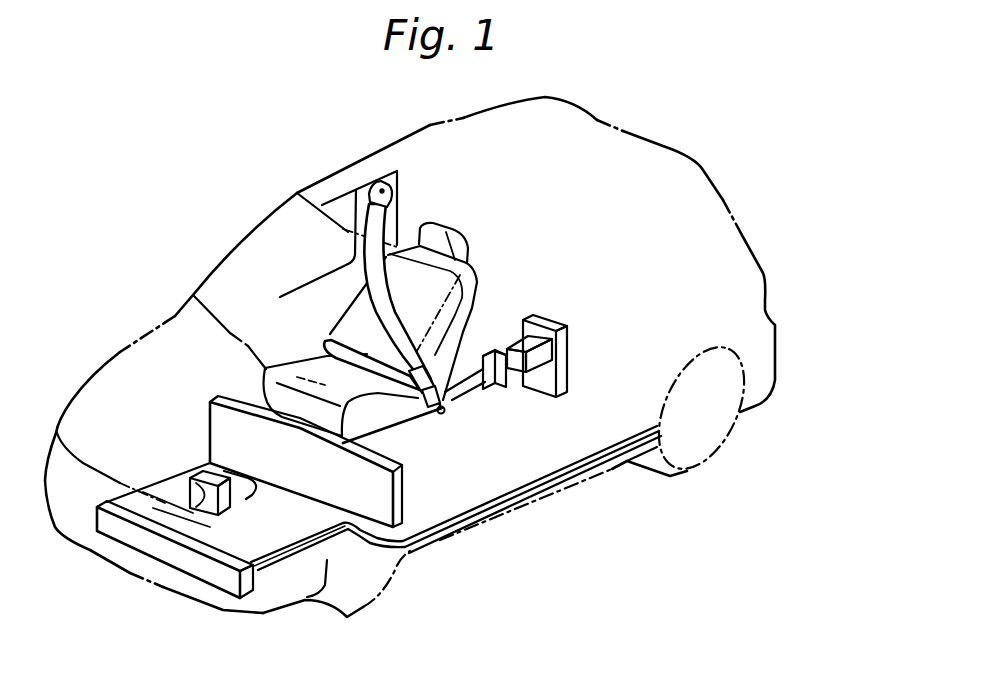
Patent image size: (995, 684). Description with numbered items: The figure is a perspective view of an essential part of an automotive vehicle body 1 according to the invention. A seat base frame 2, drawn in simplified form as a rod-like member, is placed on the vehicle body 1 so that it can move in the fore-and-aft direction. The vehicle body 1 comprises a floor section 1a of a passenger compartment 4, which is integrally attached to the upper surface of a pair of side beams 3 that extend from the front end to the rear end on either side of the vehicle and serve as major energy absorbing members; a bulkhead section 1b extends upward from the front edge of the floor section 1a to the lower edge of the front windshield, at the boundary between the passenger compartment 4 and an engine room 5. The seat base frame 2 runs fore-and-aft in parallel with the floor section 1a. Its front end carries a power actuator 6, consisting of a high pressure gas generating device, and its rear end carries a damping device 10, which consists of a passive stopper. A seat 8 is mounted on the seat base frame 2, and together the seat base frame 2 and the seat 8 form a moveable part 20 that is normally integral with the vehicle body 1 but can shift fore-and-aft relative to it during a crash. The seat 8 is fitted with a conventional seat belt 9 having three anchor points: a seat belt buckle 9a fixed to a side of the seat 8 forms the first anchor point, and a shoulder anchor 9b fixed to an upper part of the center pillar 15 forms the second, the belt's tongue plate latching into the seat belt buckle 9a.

The vehicle body 1 is at (528, 510).
The floor section 1a is at (594, 462).
The bulkhead section 1b is at (338, 490).
The seat base frame 2 is at (469, 386).
The side beams 3 is at (277, 567).
The passenger compartment 4 is at (594, 218).
The engine room 5 is at (152, 463).
The power actuator 6 is at (232, 488).
The seat 8 is at (390, 412).
The seat belt 9 is at (387, 298).
The seat belt buckle 9a is at (462, 340).
The shoulder anchor 9b is at (393, 197).
The damping device 10 is at (549, 311).
The center pillar 15 is at (390, 217).
The moveable part 20 is at (447, 462).